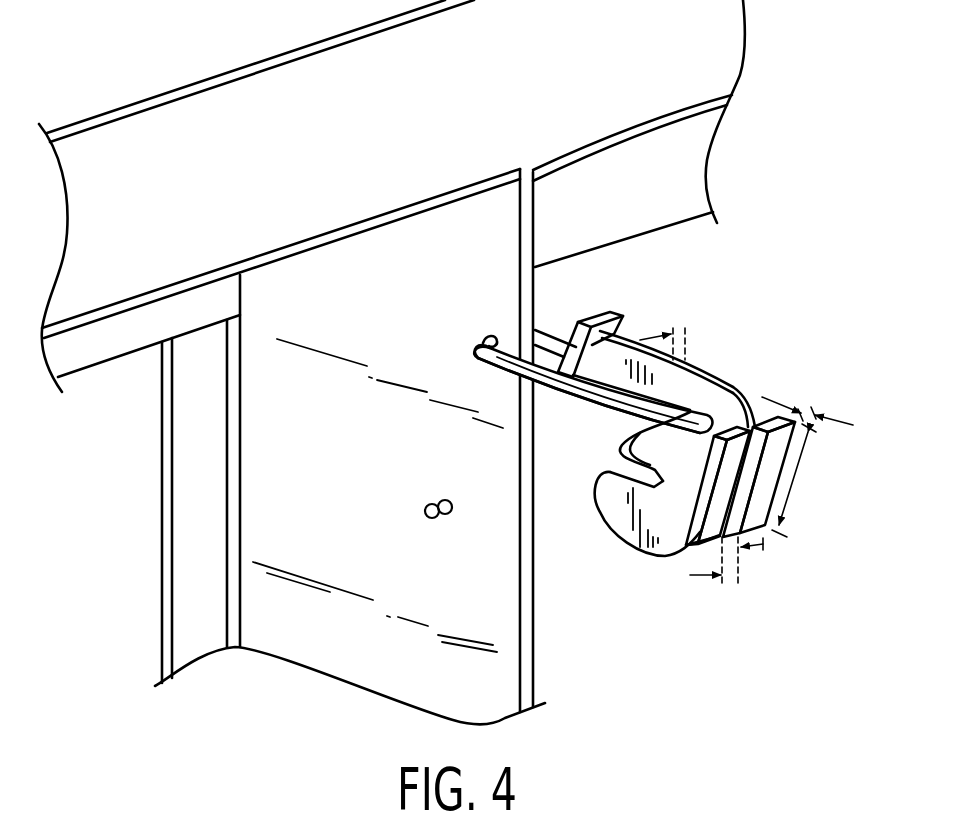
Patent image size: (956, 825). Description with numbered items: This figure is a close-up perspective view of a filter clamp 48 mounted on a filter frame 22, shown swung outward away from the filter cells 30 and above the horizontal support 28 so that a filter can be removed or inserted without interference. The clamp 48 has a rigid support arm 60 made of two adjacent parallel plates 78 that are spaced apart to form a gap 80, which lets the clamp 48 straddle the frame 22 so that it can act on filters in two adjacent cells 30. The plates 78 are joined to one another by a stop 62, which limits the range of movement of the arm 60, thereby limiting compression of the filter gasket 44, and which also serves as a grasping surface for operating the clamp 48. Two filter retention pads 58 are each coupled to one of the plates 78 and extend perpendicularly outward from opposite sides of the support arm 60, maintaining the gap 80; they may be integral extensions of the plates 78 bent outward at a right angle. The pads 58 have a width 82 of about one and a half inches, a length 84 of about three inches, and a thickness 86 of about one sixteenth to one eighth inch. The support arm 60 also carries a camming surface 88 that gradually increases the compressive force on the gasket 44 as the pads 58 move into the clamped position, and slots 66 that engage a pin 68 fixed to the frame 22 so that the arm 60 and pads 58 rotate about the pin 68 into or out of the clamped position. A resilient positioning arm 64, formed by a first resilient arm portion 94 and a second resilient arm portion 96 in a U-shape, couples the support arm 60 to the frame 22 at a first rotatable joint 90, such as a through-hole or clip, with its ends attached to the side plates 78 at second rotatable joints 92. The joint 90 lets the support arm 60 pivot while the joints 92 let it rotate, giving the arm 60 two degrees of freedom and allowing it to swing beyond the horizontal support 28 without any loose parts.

The filter frame 22 is at (535, 220).
The horizontal support 28 is at (738, 57).
The filter cells 30 is at (499, 681).
The filter gasket 44 is at (233, 521).
The filter clamp 48 is at (808, 262).
The filter retention pads 58 is at (773, 490).
The rigid support arm 60 is at (649, 326).
The stop 62 is at (603, 312).
The resilient positioning arm 64 is at (562, 385).
The slots 66 is at (628, 462).
The pin 68 is at (436, 497).
The plates 78 is at (700, 378).
The gap 80 is at (689, 328).
The width 82 is at (741, 577).
The length 84 is at (795, 472).
The thickness 86 is at (824, 422).
The camming surface 88 is at (622, 540).
The first rotatable joint 90 is at (491, 335).
The second rotatable joints 92 is at (748, 401).
The first resilient arm portion 94 is at (556, 333).
The second resilient arm portion 96 is at (583, 401).